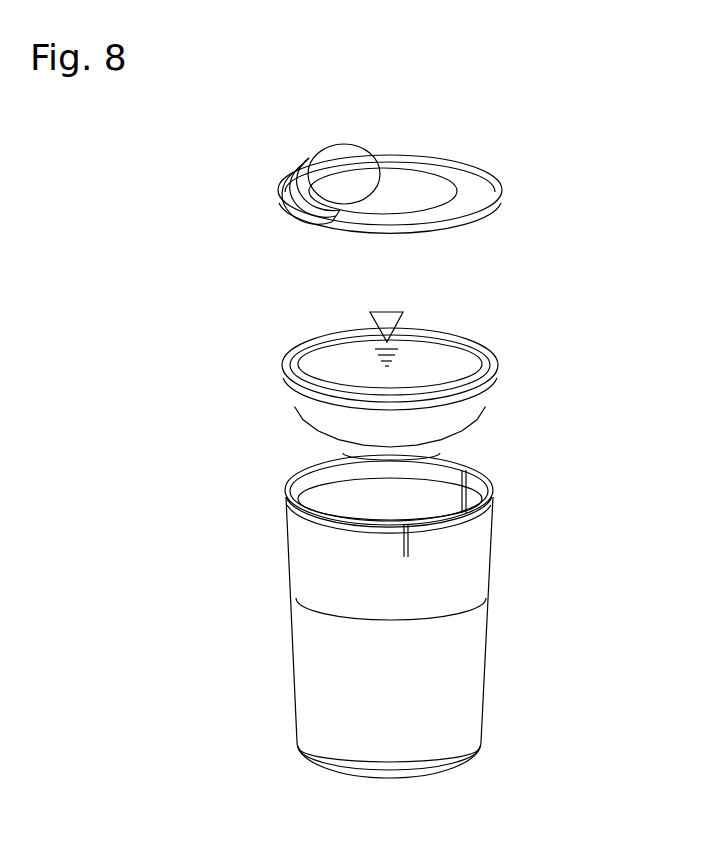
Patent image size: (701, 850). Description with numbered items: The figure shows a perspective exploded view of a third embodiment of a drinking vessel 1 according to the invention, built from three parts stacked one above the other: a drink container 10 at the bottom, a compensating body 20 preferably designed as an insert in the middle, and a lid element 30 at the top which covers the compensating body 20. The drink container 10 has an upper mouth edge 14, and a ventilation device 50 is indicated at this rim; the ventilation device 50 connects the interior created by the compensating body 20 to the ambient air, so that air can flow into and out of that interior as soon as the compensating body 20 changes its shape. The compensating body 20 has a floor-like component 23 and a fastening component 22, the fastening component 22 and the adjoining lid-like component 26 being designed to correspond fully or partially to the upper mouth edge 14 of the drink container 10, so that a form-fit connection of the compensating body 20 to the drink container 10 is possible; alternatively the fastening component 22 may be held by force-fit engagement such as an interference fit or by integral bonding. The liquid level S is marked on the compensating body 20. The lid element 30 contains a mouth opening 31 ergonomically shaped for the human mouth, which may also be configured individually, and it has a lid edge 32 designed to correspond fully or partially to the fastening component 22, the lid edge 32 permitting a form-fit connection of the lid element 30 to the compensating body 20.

The drinking vessel 1 is at (232, 158).
The drink container 10 is at (488, 628).
The upper mouth edge 14 is at (490, 495).
The ventilation device 50 is at (293, 478).
The compensating body 20 is at (508, 397).
The fastening component 22 is at (493, 375).
The floor-like component 23 is at (457, 430).
The lid-like component 26 is at (477, 345).
The liquid level S is at (377, 342).
The lid element 30 is at (517, 196).
The mouth opening 31 is at (323, 187).
The lid edge 32 is at (498, 185).